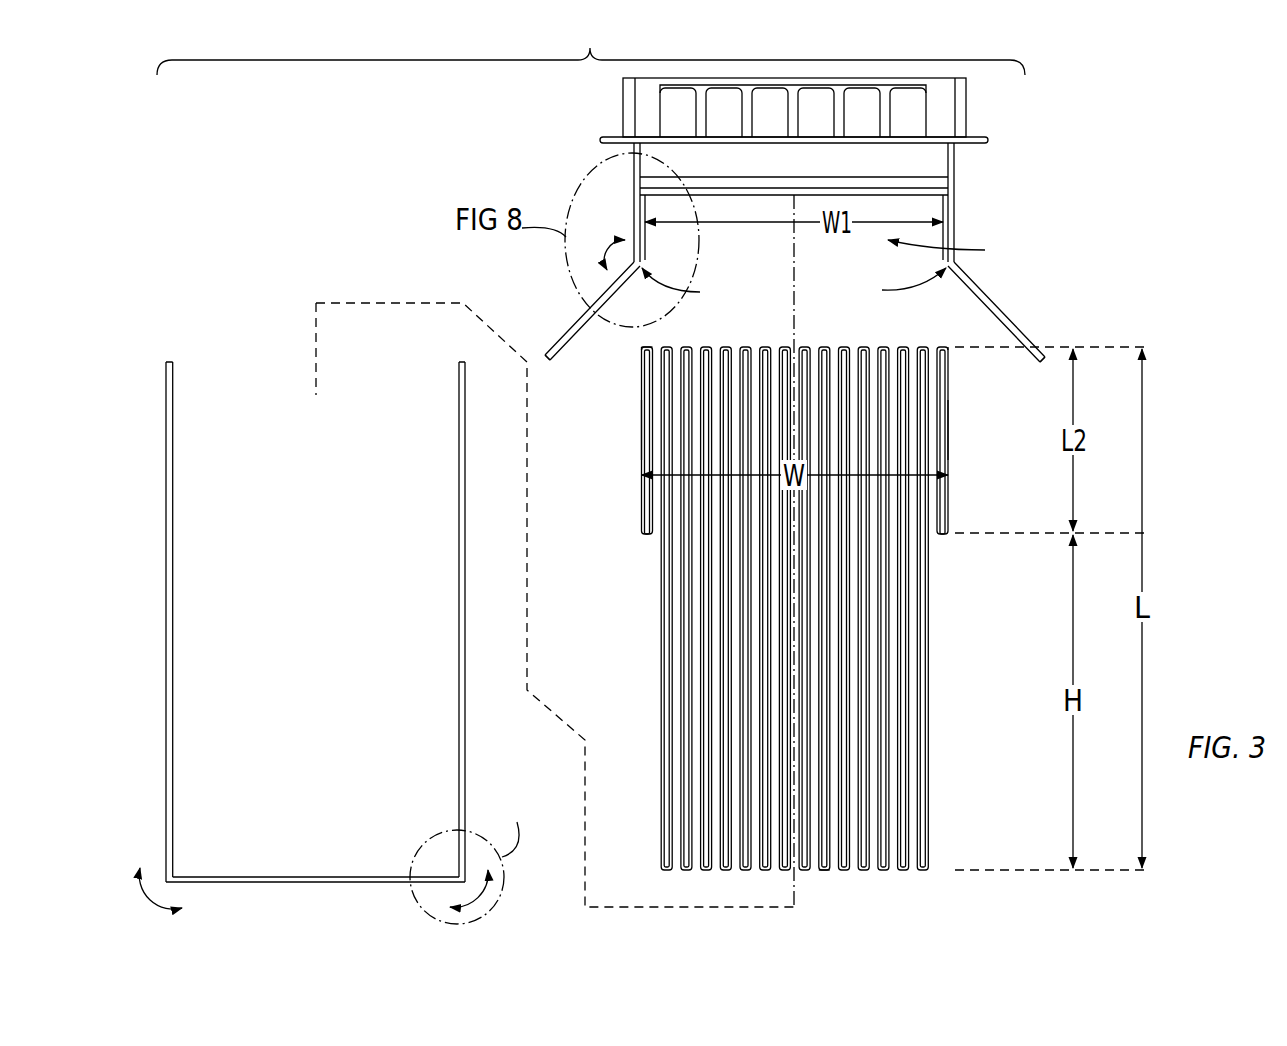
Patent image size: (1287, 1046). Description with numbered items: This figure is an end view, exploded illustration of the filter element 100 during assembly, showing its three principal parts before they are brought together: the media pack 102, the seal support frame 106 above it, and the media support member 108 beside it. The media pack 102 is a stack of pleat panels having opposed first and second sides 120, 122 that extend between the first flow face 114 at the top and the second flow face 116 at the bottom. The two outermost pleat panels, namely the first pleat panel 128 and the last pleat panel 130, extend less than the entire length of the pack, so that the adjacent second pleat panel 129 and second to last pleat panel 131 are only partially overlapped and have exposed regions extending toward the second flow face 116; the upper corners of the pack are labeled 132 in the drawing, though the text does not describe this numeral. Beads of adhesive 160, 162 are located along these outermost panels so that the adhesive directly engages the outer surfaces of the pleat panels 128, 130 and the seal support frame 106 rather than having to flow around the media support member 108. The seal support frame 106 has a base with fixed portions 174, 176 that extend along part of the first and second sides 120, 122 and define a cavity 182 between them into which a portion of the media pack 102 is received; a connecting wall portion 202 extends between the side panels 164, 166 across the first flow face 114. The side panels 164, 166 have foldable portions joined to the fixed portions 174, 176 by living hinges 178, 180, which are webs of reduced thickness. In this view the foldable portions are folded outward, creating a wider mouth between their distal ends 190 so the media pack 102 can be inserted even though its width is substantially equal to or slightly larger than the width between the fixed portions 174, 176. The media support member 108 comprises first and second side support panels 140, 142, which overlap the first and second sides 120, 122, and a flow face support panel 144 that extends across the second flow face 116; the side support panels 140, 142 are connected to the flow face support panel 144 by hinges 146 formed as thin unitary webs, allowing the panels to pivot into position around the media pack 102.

The filter element 100 is at (591, 38).
The media pack 102 is at (795, 608).
The seal support frame 106 is at (948, 157).
The media support member 108 is at (466, 613).
The first flow face 114 is at (793, 347).
The second flow face 116 is at (833, 872).
The first side 120 is at (661, 648).
The second side 122 is at (930, 648).
The first pleat panel 128 is at (641, 520).
The second pleat panel 129 is at (661, 578).
The last pleat panel 130 is at (948, 520).
The second to last pleat panel 131 is at (930, 578).
The fin tips 132 is at (642, 350).
The first side support panel 140 is at (210, 515).
The second side support panel 142 is at (459, 533).
The flow face support panel 144 is at (340, 877).
The hinges 146 is at (173, 876).
The bead of adhesive 160 is at (641, 436).
The bead of adhesive 162 is at (948, 436).
The side panel 164 is at (573, 323).
The side panel 166 is at (1015, 330).
The fixed portion 174 is at (634, 208).
The fixed portion 176 is at (955, 220).
The hinge 178 is at (696, 287).
The hinge 180 is at (892, 287).
The cavity 182 is at (961, 249).
The distal ends 190 is at (548, 360).
The connecting wall portion 202 is at (742, 190).